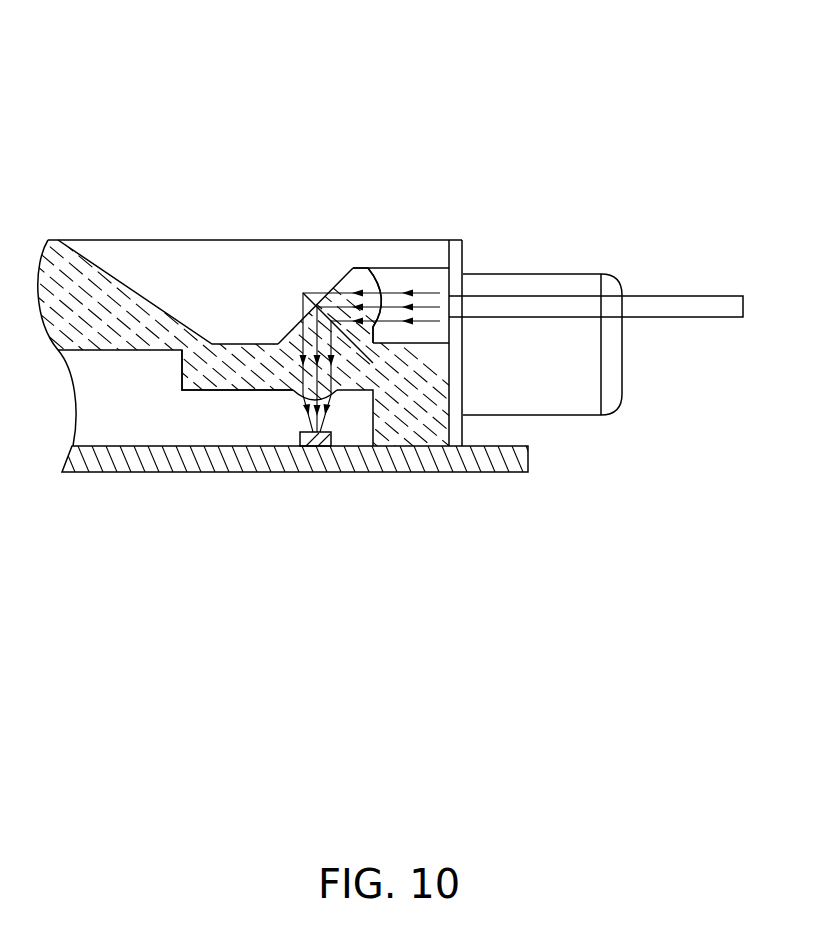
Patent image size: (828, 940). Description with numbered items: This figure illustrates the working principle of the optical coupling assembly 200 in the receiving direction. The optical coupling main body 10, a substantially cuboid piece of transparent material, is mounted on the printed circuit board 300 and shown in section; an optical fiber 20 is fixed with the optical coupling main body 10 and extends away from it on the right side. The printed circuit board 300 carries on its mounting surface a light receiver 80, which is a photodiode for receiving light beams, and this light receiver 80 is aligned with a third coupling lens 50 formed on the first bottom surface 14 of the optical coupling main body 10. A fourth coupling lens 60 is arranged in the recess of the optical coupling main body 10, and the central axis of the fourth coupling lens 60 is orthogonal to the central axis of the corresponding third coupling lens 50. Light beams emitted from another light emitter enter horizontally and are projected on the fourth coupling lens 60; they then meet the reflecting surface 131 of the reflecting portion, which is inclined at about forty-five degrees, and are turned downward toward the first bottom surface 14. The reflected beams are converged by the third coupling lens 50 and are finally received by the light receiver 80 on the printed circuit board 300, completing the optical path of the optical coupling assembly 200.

The optical coupling assembly 200 is at (390, 56).
The optical coupling main body 10 is at (67, 280).
The reflecting surface 131 is at (340, 281).
The fourth coupling lens 60 is at (375, 285).
The third coupling lens 50 is at (293, 392).
The first bottom surface 14 is at (223, 392).
The light receiver 80 is at (310, 447).
The printed circuit board 300 is at (415, 462).
The optical fiber 20 is at (702, 308).